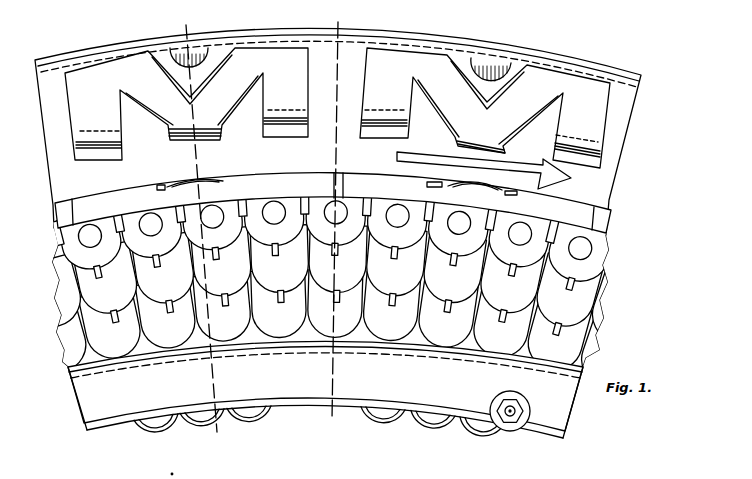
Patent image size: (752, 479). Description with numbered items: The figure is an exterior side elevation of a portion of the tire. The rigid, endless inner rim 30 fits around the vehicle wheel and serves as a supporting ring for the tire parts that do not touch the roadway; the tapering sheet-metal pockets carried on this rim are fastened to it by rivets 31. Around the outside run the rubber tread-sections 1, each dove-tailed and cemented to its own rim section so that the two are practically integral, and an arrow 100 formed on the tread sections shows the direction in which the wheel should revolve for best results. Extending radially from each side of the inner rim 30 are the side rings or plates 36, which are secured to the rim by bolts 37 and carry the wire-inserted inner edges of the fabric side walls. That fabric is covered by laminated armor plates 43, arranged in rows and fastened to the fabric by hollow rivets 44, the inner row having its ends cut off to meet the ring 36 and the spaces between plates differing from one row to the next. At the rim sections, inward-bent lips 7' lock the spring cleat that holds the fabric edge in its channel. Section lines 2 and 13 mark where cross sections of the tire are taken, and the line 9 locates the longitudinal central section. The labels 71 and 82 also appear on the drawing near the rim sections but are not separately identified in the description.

The tread-section 1 is at (338, 253).
The section line 2— 2 is at (347, 431).
The lips 7' is at (333, 203).
The section line 9— 9 is at (170, 465).
The section line 13— 13 is at (237, 440).
The inner rim 30 is at (563, 439).
The rivets 31 is at (486, 434).
The side rings or plates 36 is at (325, 386).
The bolts 37 is at (510, 425).
The laminated armor plates 43 is at (337, 292).
The hollow rivets 44 is at (393, 305).
The lugs 71 is at (518, 195).
The domes 82 is at (462, 191).
The arrow 100 is at (489, 176).